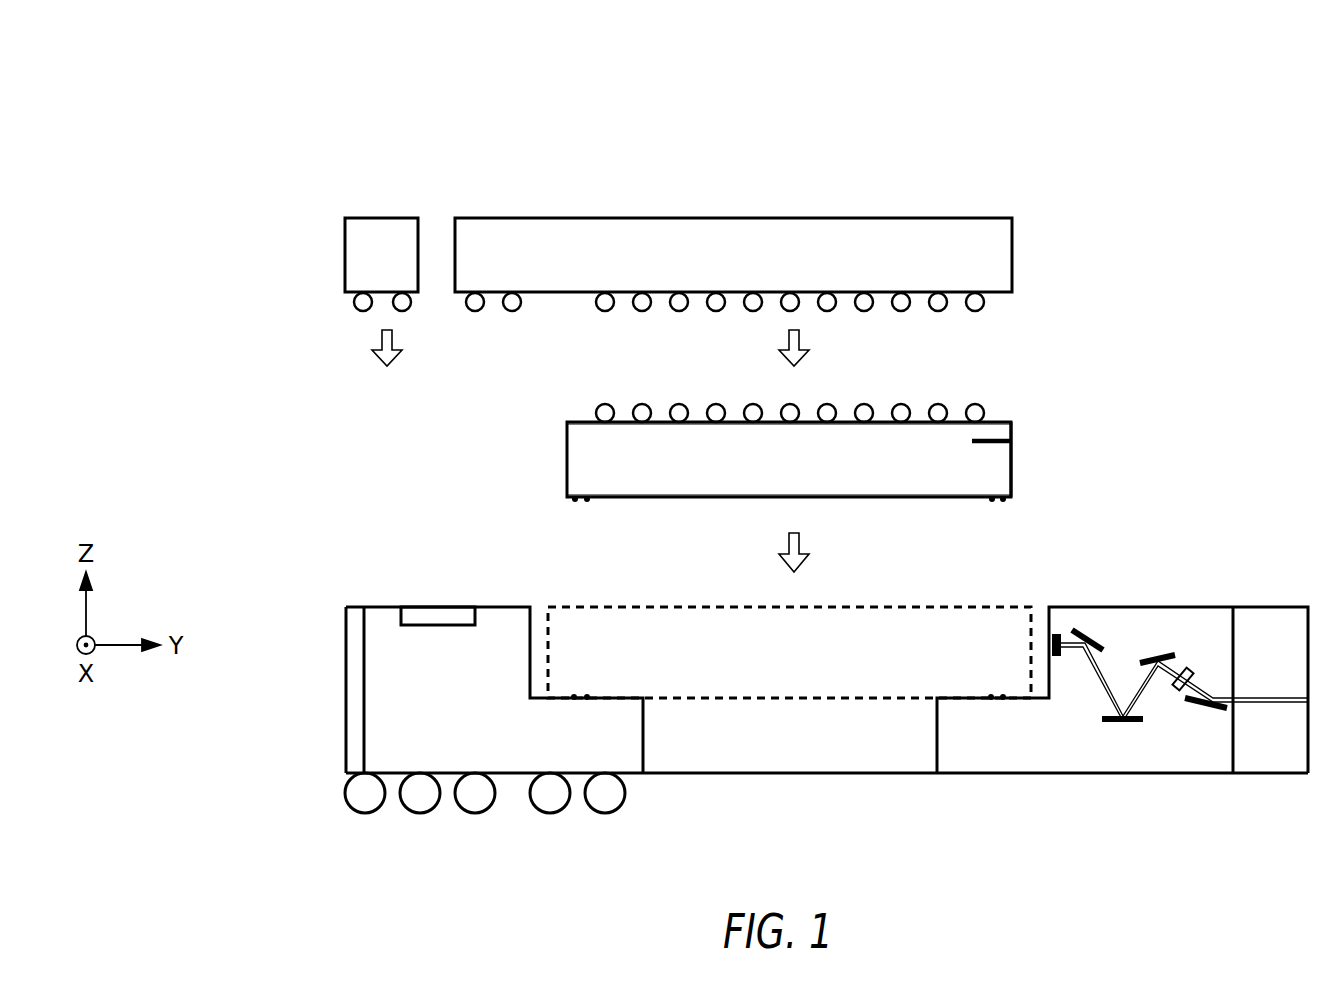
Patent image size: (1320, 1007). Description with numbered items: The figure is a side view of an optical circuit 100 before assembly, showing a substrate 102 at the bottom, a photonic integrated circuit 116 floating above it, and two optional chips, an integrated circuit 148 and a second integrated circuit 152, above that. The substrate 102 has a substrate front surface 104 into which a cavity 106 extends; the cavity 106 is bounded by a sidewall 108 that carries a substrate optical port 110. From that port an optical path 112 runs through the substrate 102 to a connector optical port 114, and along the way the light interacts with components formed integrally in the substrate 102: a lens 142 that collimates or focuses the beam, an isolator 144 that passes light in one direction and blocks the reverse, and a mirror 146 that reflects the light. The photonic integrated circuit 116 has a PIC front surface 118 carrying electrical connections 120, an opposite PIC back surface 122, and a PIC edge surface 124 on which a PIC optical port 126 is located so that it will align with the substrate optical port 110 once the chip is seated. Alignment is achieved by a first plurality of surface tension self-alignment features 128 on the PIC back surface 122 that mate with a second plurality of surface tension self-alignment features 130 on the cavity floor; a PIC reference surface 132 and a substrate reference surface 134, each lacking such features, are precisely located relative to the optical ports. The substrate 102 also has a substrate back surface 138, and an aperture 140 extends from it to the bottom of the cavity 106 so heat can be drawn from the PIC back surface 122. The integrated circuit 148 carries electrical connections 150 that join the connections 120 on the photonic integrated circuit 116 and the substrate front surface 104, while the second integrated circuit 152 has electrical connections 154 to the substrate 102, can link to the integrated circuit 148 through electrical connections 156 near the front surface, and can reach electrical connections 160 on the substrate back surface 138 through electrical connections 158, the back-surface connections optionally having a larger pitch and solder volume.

The optical circuit 100 is at (388, 108).
The substrate 102 is at (512, 745).
The substrate front surface 104 is at (493, 609).
The cavity 106 is at (547, 663).
The sidewall 108 is at (1043, 614).
The substrate optical port 110 is at (1052, 652).
The optical path 112 is at (1167, 677).
The connector optical port 114 is at (1268, 777).
The photonic integrated circuit 116 is at (578, 458).
The PIC front surface 118 is at (843, 426).
The electrical connections 120 is at (936, 415).
The PIC back surface 122 is at (843, 492).
The PIC edge surface 124 is at (1010, 480).
The PIC optical port 126 is at (1012, 441).
The first plurality of surface tension self-alignment features 128 is at (567, 497).
The second plurality of surface tension self-alignment features 130 is at (592, 694).
The PIC reference surface 132 is at (625, 499).
The substrate reference surface 134 is at (612, 701).
The substrate back surface 138 is at (1012, 771).
The aperture 140 is at (765, 771).
The lens 142 is at (1063, 640).
The isolator 144 is at (1189, 677).
The mirror 146 is at (1135, 724).
The integrated circuit 148 is at (718, 236).
The electrical connections 150 is at (936, 294).
The second integrated circuit 152 is at (383, 236).
The electrical connections 154 is at (353, 302).
The electrical connections 156 is at (415, 627).
The electrical connections 158 is at (362, 676).
The electrical connections 160 is at (418, 814).